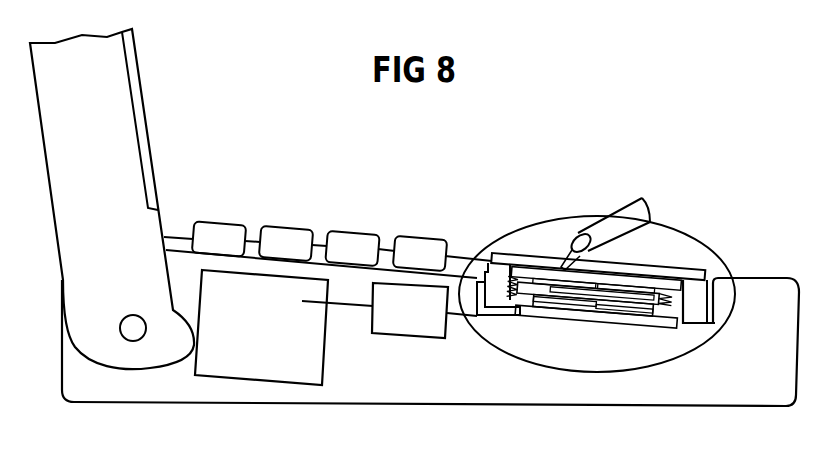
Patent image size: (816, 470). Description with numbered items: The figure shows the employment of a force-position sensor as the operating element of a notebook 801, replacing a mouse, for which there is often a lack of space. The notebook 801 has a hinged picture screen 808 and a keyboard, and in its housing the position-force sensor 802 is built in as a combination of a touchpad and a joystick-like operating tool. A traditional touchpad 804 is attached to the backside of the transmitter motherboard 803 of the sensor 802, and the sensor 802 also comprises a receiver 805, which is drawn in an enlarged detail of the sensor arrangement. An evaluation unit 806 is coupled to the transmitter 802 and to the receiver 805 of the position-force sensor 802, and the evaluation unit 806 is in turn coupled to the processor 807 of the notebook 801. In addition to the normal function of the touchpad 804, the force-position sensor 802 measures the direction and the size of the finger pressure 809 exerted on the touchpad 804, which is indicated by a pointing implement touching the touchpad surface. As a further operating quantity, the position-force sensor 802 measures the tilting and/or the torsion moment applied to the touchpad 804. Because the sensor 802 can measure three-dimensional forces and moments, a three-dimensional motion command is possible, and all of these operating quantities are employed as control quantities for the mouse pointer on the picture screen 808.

The notebook 801 is at (738, 395).
The position-force sensor 802 is at (707, 255).
The transmitter motherboard 803 is at (647, 277).
The touchpad 804 is at (513, 260).
The receiver 805 is at (612, 317).
The evaluation unit 806 is at (425, 330).
The processor 807 is at (308, 352).
The picture screen 808 is at (143, 117).
The finger pressure 809 is at (620, 217).